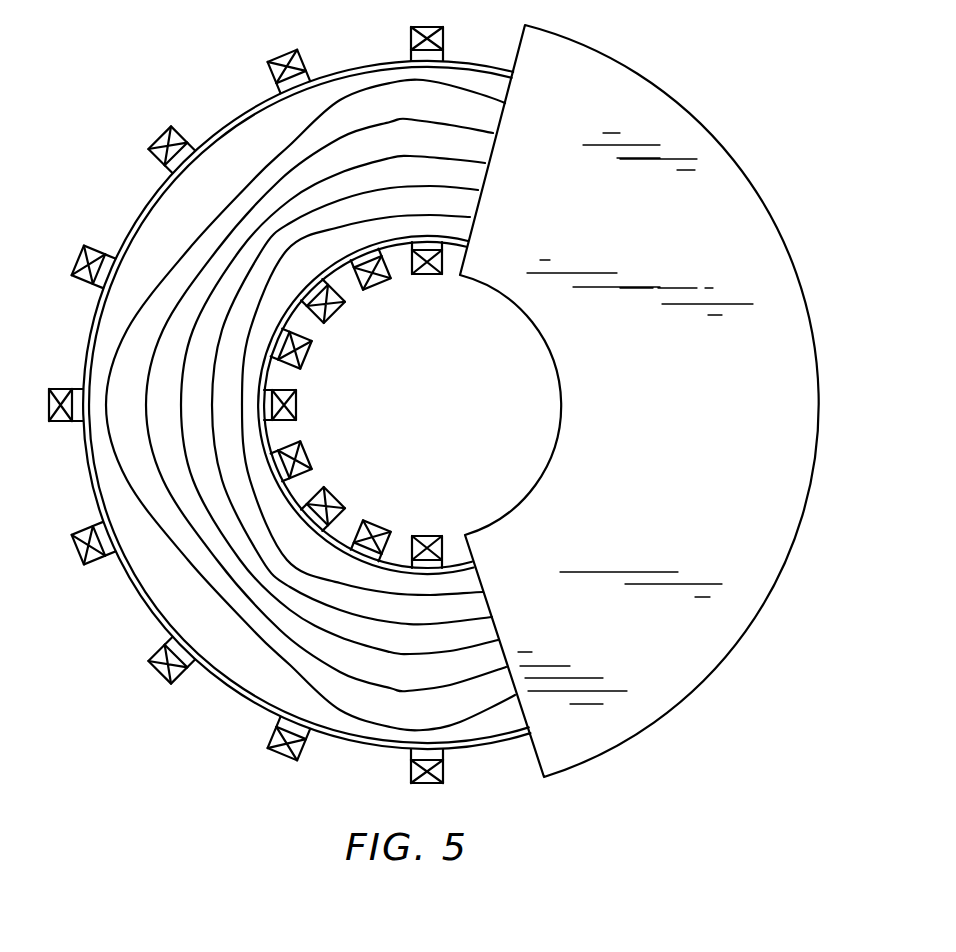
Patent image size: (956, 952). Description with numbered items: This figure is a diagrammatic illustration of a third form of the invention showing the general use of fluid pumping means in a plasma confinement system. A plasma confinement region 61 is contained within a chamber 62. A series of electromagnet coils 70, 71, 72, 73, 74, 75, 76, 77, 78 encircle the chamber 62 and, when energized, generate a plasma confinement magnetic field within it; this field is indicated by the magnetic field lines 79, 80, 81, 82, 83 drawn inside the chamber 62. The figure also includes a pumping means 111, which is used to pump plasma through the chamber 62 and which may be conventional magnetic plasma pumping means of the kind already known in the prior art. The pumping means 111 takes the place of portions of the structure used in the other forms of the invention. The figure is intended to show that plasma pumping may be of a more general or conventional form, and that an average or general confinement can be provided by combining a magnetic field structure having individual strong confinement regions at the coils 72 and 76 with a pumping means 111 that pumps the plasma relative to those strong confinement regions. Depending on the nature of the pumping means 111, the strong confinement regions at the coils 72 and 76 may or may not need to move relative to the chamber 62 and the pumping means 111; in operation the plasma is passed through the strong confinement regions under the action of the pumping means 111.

The plasma confinement region 61 is at (448, 152).
The chamber 62 is at (233, 128).
The electromagnet coil 70 is at (432, 783).
The electromagnet coil 71 is at (285, 752).
The electromagnet coil 72 is at (158, 660).
The electromagnet coil 73 is at (76, 548).
The electromagnet coil 74 is at (59, 392).
The electromagnet coil 75 is at (71, 270).
The electromagnet coil 76 is at (151, 148).
The electromagnet coil 77 is at (284, 58).
The electromagnet coil 78 is at (425, 27).
The magnetic field line 79 is at (340, 109).
The magnetic field line 80 is at (400, 119).
The magnetic field line 81 is at (408, 156).
The magnetic field line 82 is at (418, 186).
The magnetic field line 83 is at (424, 215).
The pumping means 111 is at (756, 199).